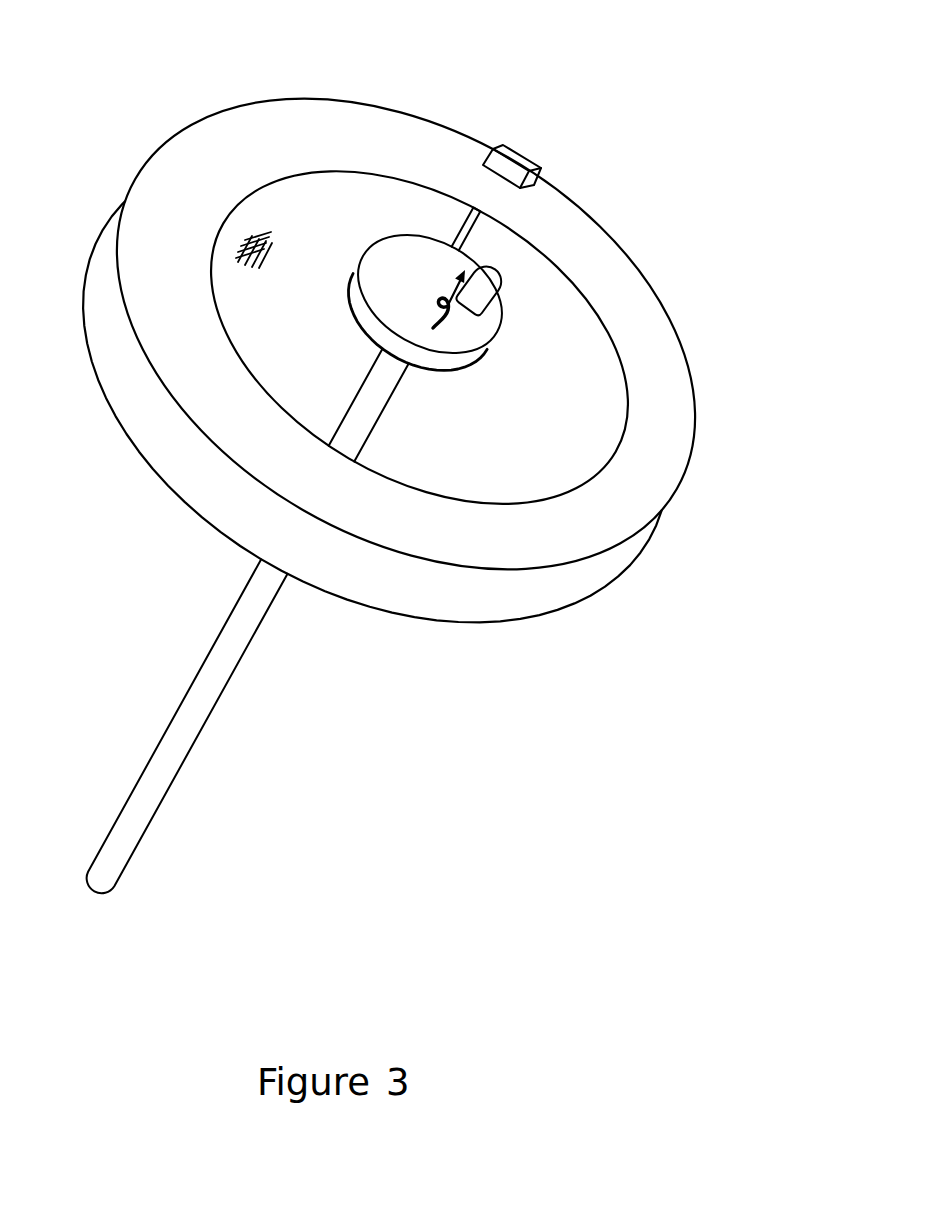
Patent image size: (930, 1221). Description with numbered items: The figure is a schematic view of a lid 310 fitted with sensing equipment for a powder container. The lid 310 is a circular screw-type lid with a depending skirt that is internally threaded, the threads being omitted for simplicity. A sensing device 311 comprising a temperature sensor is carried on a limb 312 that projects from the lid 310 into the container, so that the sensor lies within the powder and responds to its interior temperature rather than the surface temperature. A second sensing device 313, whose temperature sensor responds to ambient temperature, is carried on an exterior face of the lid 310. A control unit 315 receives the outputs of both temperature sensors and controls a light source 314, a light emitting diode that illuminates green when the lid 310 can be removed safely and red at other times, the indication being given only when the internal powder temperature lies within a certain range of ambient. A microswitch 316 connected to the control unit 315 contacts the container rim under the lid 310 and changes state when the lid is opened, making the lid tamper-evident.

The lid 310 is at (146, 80).
The sensing device 311 is at (387, 264).
The limb 312 is at (170, 750).
The second sensing device 313 is at (487, 293).
The light source 314 is at (430, 333).
The control unit 315 is at (521, 157).
The microswitch 316 is at (469, 222).